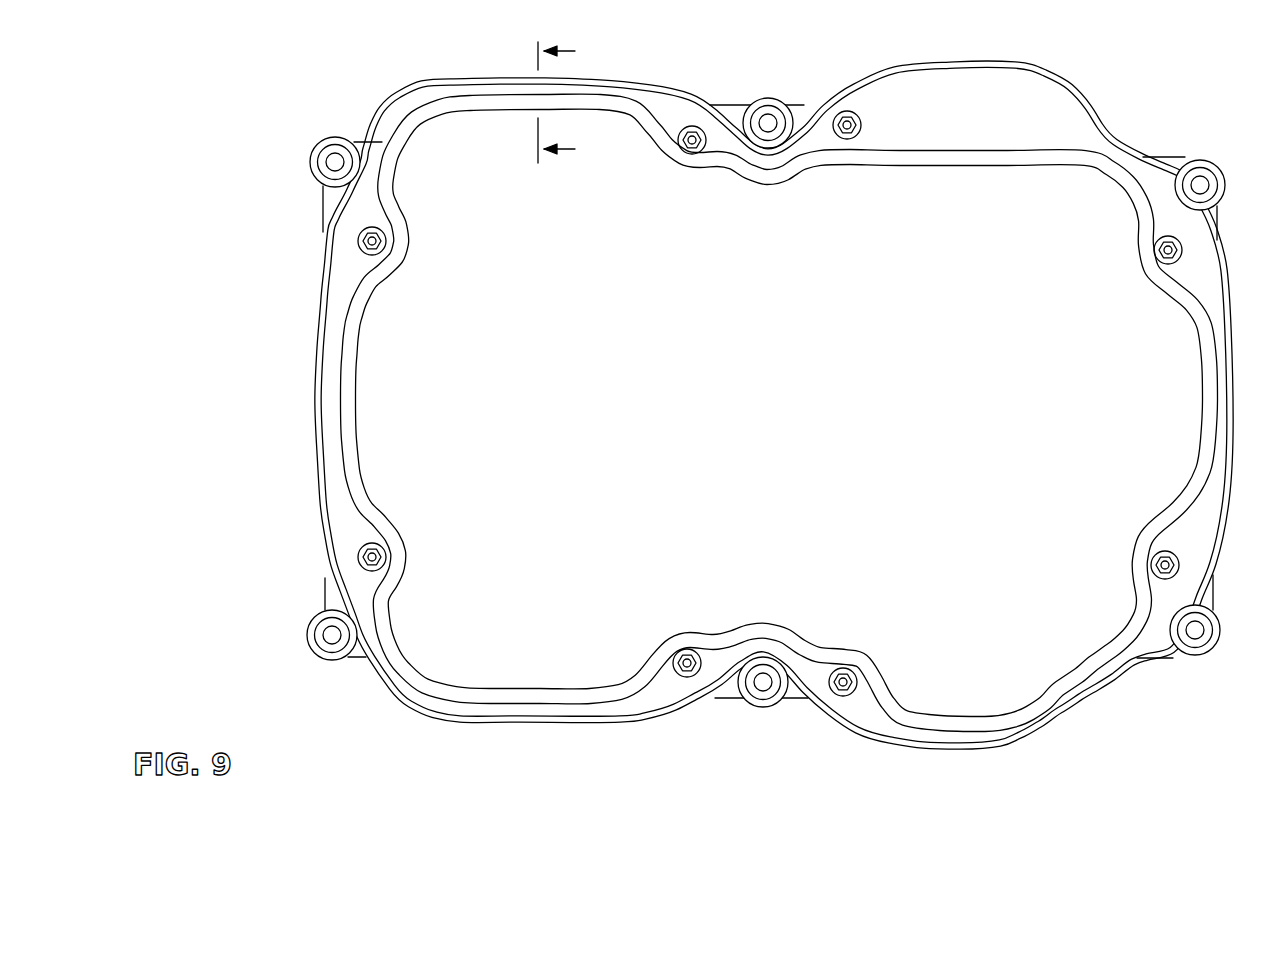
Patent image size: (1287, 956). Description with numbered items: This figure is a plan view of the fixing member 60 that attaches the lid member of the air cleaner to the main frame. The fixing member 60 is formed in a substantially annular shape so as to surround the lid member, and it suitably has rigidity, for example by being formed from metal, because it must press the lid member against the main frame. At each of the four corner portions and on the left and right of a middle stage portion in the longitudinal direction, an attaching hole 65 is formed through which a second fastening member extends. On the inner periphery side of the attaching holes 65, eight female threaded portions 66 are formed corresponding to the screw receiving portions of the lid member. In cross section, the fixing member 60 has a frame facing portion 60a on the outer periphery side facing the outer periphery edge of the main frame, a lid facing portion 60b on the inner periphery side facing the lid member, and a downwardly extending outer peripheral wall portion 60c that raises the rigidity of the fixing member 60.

The fixing member 60 is at (758, 397).
The frame facing portion 60a is at (507, 88).
The lid facing portion 60b is at (523, 103).
The outer peripheral wall portion 60c is at (563, 80).
The attaching hole 65 is at (330, 160).
The female threaded portion 66 is at (384, 247).